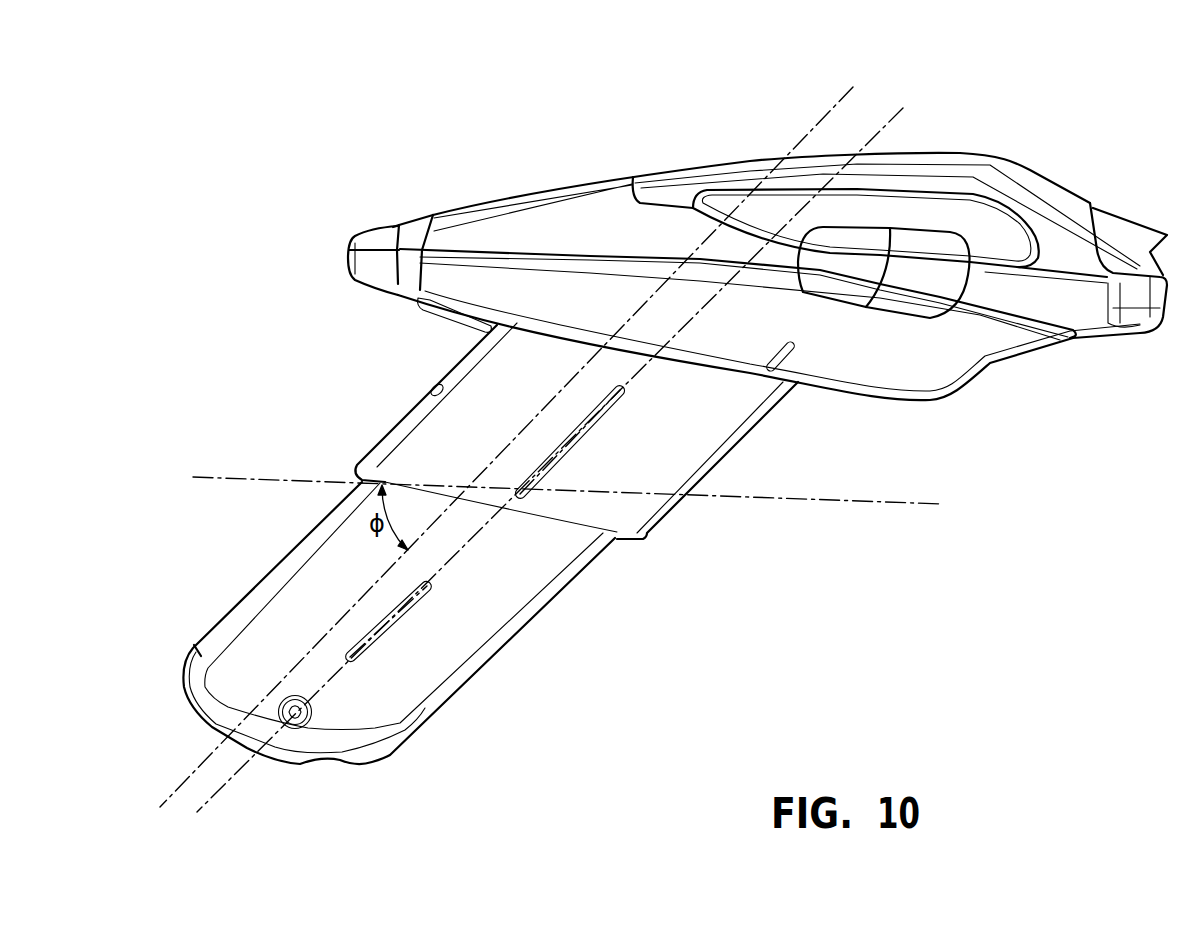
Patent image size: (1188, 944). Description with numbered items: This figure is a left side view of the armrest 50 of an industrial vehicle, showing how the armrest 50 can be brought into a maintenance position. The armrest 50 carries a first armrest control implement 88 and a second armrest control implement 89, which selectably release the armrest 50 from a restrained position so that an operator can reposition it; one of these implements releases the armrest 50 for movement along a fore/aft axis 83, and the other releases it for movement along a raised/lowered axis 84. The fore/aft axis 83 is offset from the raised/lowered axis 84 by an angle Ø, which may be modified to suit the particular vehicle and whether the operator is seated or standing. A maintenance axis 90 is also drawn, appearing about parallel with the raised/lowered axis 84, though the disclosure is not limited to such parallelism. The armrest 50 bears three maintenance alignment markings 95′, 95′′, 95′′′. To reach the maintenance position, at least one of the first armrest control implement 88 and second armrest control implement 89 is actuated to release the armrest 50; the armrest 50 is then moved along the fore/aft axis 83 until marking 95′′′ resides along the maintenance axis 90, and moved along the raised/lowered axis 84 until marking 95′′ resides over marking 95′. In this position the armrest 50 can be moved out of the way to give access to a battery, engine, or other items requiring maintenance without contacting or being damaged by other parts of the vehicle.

The armrest 50 is at (380, 148).
The fore/aft axis 83 is at (857, 504).
The raised/lowered axis 84 is at (830, 104).
The maintenance axis 90 is at (890, 130).
The first armrest control implement 88 is at (945, 247).
The second armrest control implement 89 is at (863, 240).
The maintenance alignment marking 95′ is at (392, 624).
The maintenance alignment marking 95′′ is at (582, 437).
The maintenance alignment marking 95′′′ is at (792, 352).